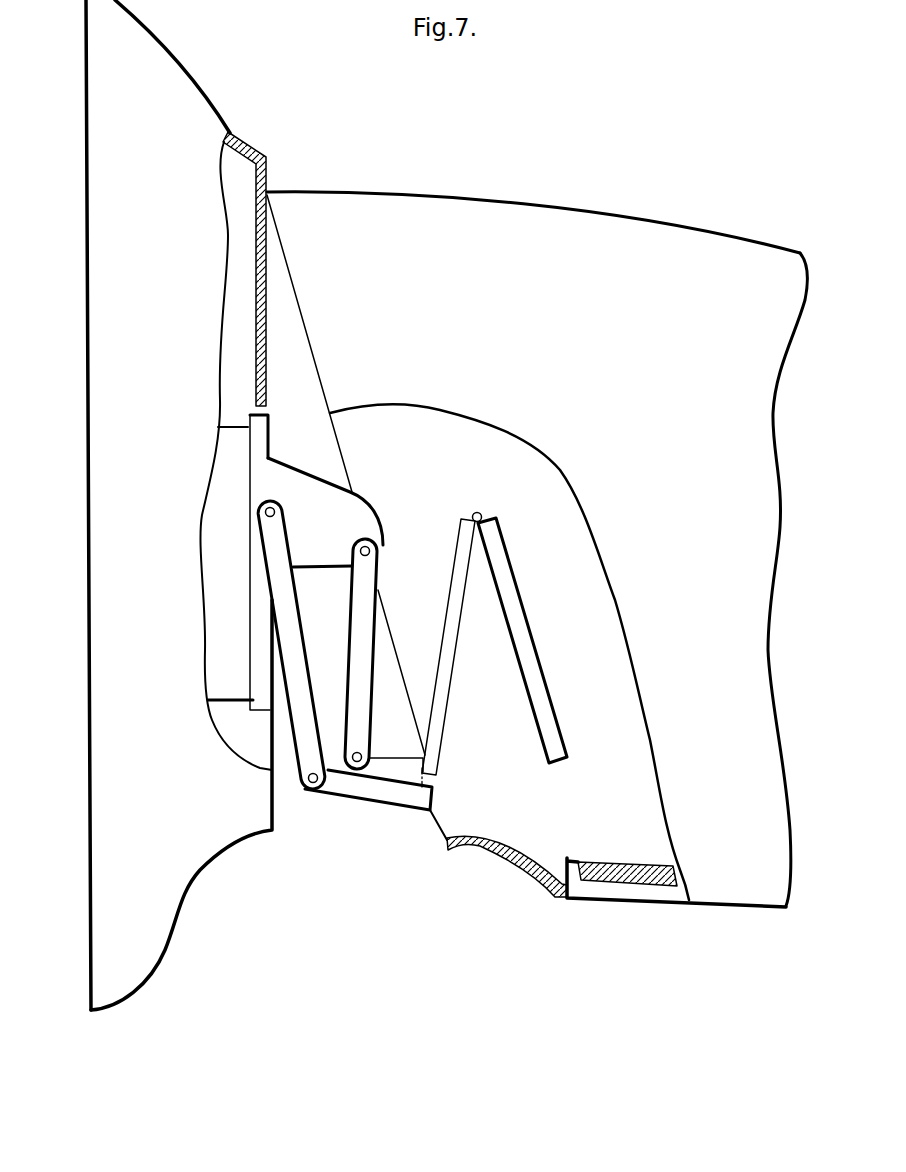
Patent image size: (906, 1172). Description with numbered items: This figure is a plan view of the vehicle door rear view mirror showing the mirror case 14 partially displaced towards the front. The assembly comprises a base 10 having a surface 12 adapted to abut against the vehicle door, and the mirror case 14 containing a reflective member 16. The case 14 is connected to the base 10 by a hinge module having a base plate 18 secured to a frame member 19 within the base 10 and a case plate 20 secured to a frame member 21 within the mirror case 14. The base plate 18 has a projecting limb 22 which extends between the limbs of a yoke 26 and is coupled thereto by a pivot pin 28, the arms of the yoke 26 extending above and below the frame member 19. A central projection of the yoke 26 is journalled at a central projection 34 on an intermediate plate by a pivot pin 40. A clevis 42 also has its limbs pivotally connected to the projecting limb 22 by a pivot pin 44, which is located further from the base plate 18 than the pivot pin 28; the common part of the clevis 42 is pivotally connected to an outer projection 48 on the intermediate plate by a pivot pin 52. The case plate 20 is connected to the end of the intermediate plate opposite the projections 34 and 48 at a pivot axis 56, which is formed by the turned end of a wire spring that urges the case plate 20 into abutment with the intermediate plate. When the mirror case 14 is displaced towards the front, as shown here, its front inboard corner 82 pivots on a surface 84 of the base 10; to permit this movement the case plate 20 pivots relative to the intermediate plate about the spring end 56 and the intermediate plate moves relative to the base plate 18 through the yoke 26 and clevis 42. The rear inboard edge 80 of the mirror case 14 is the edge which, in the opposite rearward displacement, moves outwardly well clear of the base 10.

The base 10 is at (198, 122).
The surface 12 is at (90, 810).
The mirror case 14 is at (650, 245).
The reflective member 16 is at (628, 873).
The base plate 18 is at (258, 654).
The frame member 19 is at (233, 437).
The case plate 20 is at (528, 647).
The frame member 21 is at (597, 702).
The projecting limb 22 is at (347, 515).
The yoke 26 is at (305, 720).
The pivot pin 28 is at (265, 510).
The central projection 34 is at (393, 790).
The pivot pin 40 is at (312, 790).
The clevis 42 is at (360, 613).
The pivot pin 44 is at (378, 546).
The outer projection 48 is at (383, 767).
The pivot pin 52 is at (355, 770).
The pivot axis 56 is at (479, 512).
The rear inboard edge 80 is at (447, 848).
The front inboard corner 82 is at (266, 194).
The surface 84 is at (267, 312).